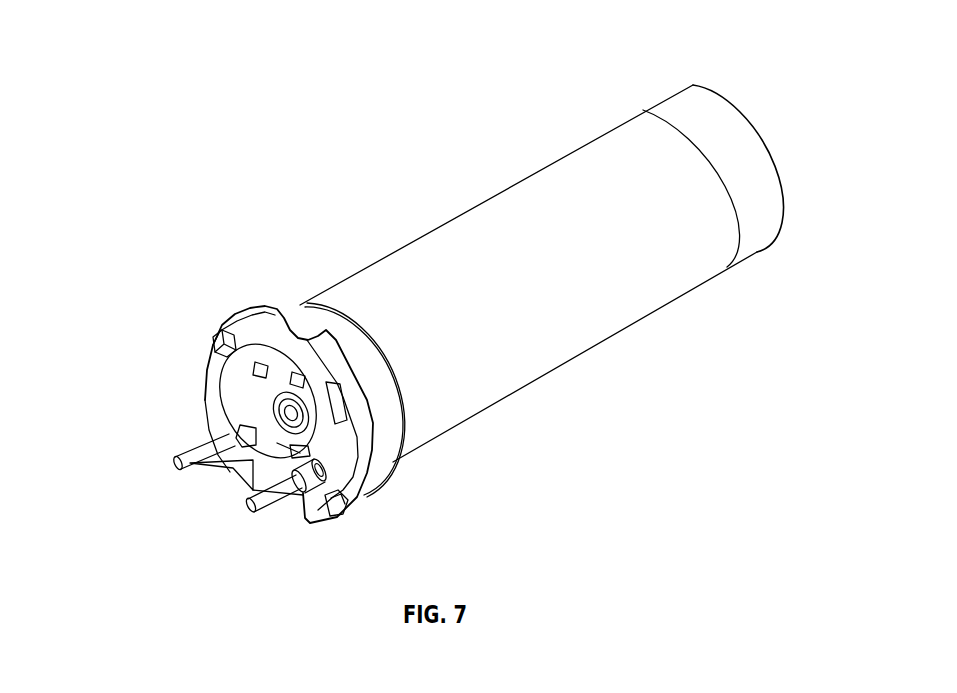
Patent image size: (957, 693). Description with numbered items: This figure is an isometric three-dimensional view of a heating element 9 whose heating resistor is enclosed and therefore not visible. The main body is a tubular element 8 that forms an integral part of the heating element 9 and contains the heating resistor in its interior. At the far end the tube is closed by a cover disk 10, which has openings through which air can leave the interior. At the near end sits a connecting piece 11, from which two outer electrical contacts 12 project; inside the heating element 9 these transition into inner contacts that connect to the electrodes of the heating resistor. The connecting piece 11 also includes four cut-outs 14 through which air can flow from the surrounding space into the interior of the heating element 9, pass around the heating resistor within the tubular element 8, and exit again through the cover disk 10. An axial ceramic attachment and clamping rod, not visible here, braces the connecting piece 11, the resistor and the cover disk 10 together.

The tubular element 8 is at (579, 368).
The heating element 9 is at (338, 188).
The cover disk 10 is at (747, 158).
The connecting piece 11 is at (182, 360).
The outer electrical contacts 12 is at (250, 510).
The cut-outs 14 is at (290, 453).